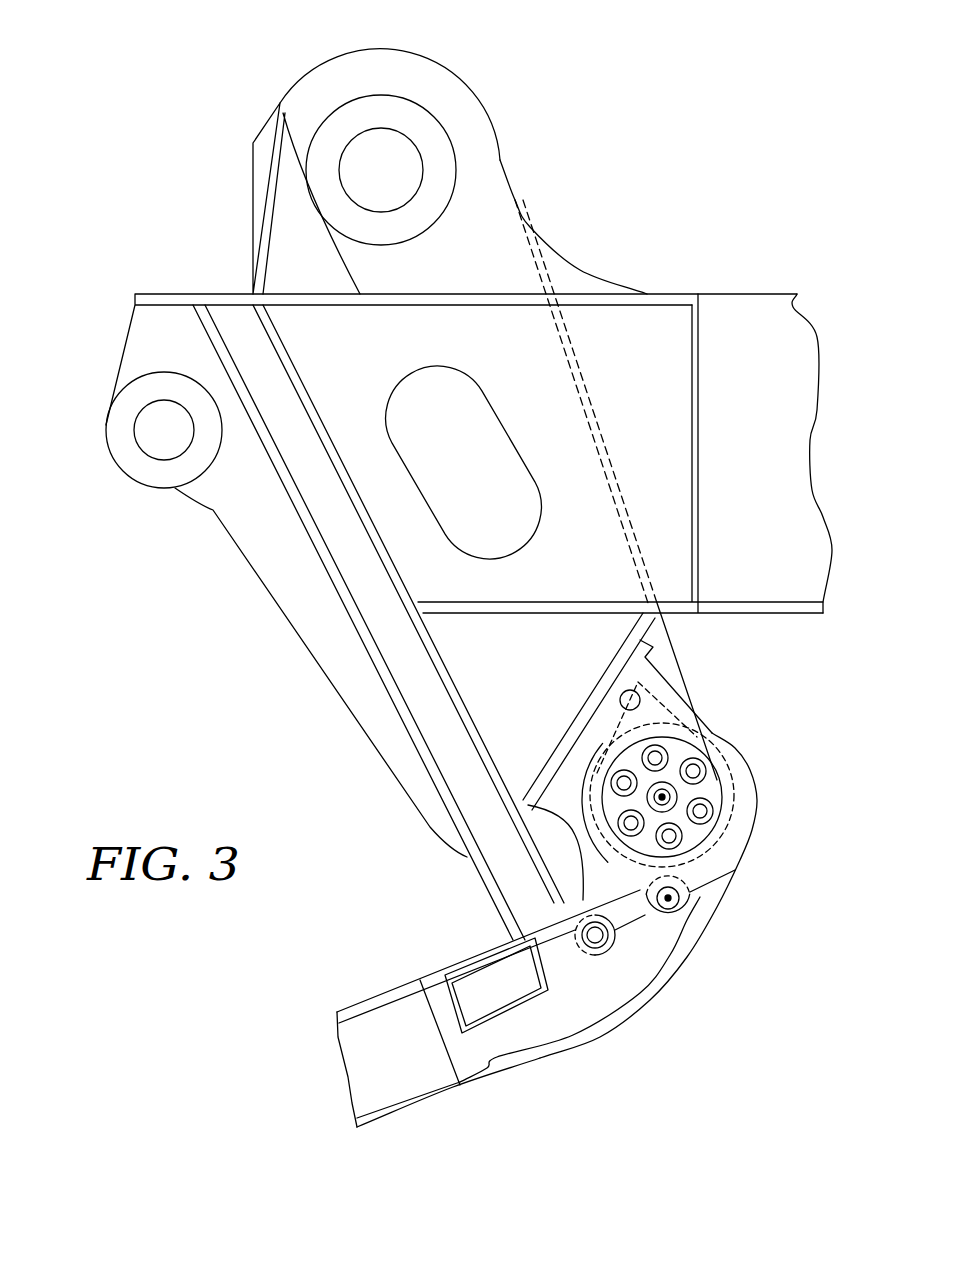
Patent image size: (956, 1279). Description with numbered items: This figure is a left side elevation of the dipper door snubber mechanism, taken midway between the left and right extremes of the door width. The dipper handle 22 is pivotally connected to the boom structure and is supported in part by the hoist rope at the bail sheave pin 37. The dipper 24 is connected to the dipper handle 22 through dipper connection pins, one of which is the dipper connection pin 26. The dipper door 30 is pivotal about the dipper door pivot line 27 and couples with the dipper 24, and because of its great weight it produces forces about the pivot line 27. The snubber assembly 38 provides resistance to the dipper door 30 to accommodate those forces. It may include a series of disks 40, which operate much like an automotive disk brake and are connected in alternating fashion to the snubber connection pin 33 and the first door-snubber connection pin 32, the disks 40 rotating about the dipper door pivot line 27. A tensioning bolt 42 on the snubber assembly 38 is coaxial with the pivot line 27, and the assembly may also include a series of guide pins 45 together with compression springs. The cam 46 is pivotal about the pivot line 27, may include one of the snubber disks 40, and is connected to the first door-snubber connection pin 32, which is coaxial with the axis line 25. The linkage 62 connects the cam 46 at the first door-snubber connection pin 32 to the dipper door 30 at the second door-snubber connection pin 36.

The dipper handle 22 is at (649, 371).
The dipper 24 is at (390, 992).
The axis line 25 is at (694, 928).
The dipper connection pin 26 is at (160, 432).
The dipper door pivot line 27 is at (665, 789).
The dipper door 30 is at (703, 920).
The first door-snubber connection pin 32 is at (676, 898).
The snubber connection pin 33 is at (619, 679).
The second door-snubber connection pin 36 is at (597, 940).
The bail sheave pin 37 is at (381, 170).
The snubber assembly 38 is at (776, 808).
The disks 40 is at (670, 681).
The tensioning bolt 42 is at (670, 797).
The guide pins 45 is at (697, 769).
The cam 46 is at (708, 734).
The linkage 62 is at (632, 923).